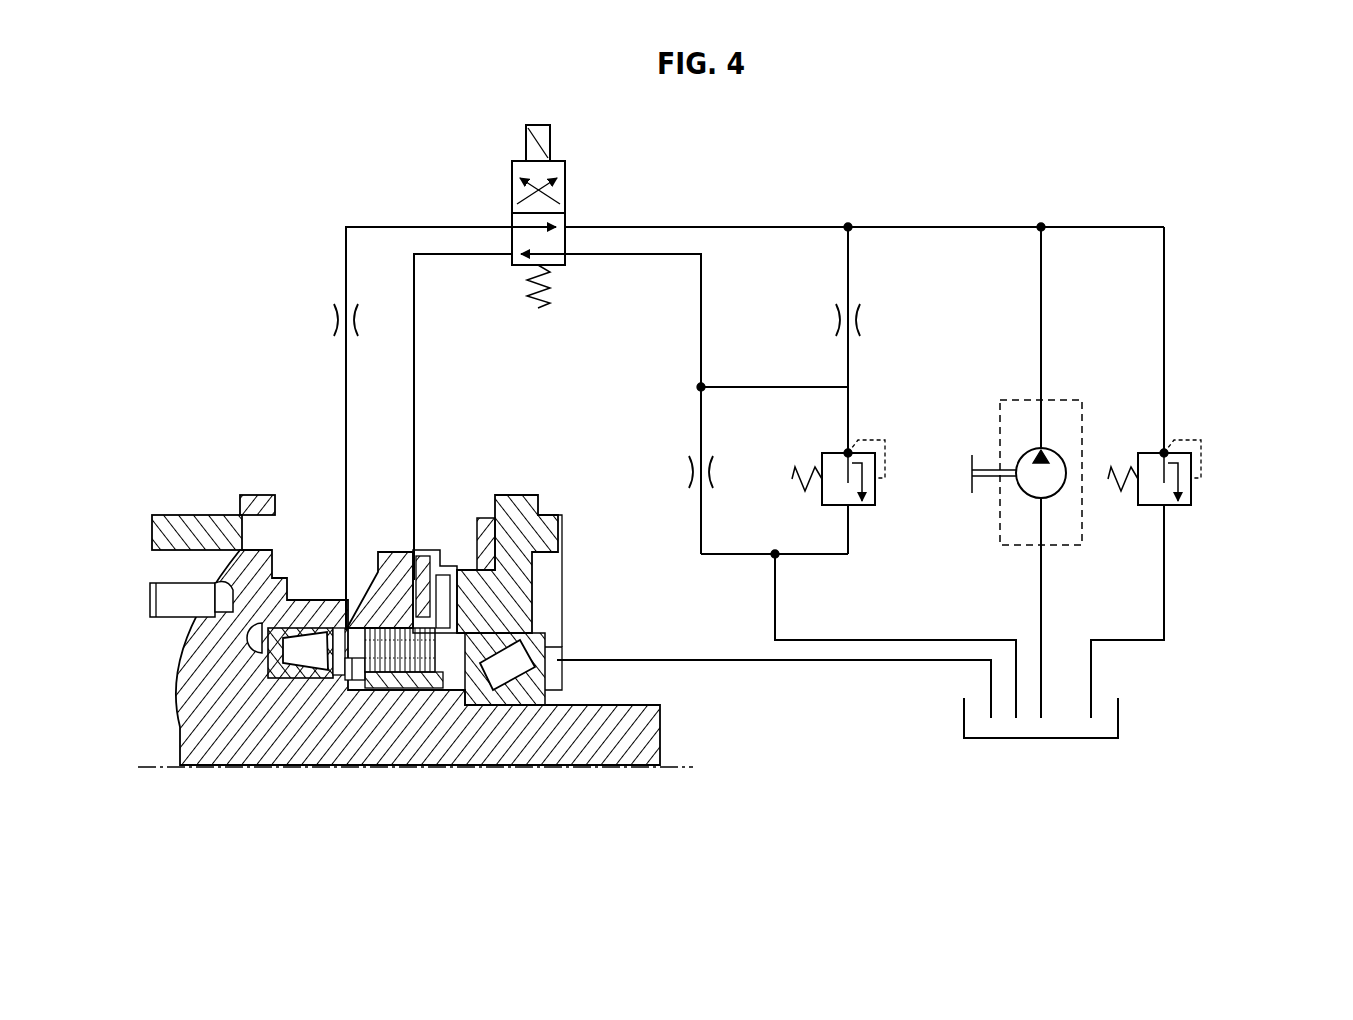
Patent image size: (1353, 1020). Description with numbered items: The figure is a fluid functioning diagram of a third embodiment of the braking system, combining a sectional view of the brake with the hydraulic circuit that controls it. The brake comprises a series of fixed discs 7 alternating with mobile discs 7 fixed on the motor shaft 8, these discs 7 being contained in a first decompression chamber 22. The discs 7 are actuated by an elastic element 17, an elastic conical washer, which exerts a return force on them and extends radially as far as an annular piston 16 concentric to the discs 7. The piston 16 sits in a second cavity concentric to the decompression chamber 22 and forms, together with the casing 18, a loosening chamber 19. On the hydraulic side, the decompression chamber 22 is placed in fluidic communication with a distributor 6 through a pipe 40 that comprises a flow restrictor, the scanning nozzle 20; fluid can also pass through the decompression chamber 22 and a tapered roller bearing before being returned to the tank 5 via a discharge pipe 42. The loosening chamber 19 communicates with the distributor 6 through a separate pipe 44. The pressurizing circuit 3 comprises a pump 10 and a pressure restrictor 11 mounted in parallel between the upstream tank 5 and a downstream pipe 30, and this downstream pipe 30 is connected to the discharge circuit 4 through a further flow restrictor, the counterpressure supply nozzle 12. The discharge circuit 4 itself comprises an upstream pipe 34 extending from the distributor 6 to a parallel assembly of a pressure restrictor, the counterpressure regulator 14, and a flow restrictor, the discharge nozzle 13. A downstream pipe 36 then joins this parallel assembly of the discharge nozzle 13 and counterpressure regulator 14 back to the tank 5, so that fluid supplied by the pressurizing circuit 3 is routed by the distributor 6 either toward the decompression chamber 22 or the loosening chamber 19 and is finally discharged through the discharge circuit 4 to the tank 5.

The pressurizing circuit 3 is at (1137, 165).
The discharge circuit 4 is at (678, 605).
The tank 5 is at (1122, 722).
The distributor 6 is at (569, 184).
The discs 7 is at (407, 649).
The motor shaft 8 is at (250, 748).
The pump 10 is at (1064, 440).
The pressure restrictor 11 is at (1205, 460).
The counterpressure supply nozzle 12 is at (838, 320).
The discharge nozzle 13 is at (691, 472).
The counterpressure regulator 14 is at (888, 460).
The piston 16 is at (428, 600).
The elastic element 17 is at (462, 572).
The casing 18 is at (518, 578).
The chamber 19 is at (413, 590).
The scanning nozzle 20 is at (336, 320).
The decompression chamber 22 is at (353, 668).
The downstream pipe 30 is at (938, 222).
The upstream pipe 34 is at (622, 258).
The downstream pipe 36 is at (892, 637).
The pipe 40 is at (437, 222).
The discharge pipe 42 is at (708, 657).
The pipe 44 is at (462, 258).